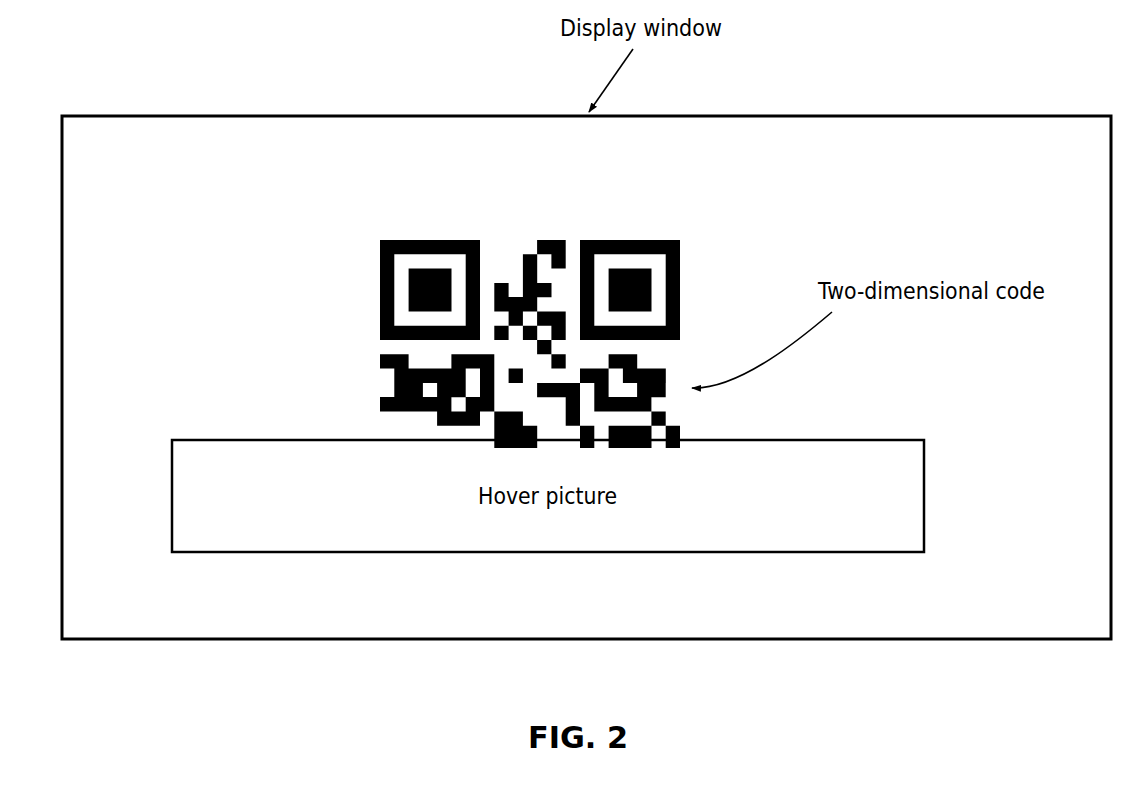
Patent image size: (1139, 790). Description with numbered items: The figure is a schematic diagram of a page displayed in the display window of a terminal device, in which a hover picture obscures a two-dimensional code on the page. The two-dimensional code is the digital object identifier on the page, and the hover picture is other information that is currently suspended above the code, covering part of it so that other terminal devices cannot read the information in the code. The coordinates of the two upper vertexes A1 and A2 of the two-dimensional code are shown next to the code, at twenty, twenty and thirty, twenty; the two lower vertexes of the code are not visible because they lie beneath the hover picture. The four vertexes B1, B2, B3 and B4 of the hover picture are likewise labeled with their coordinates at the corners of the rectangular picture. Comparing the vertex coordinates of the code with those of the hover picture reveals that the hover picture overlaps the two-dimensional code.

The upper vertex of two-dimensional code A1 is at (381, 237).
The upper vertex of two-dimensional code A2 is at (682, 237).
The vertex of hover picture B1 is at (182, 421).
The vertex of hover picture B2 is at (951, 421).
The vertex of hover picture B3 is at (177, 572).
The vertex of hover picture B4 is at (946, 572).